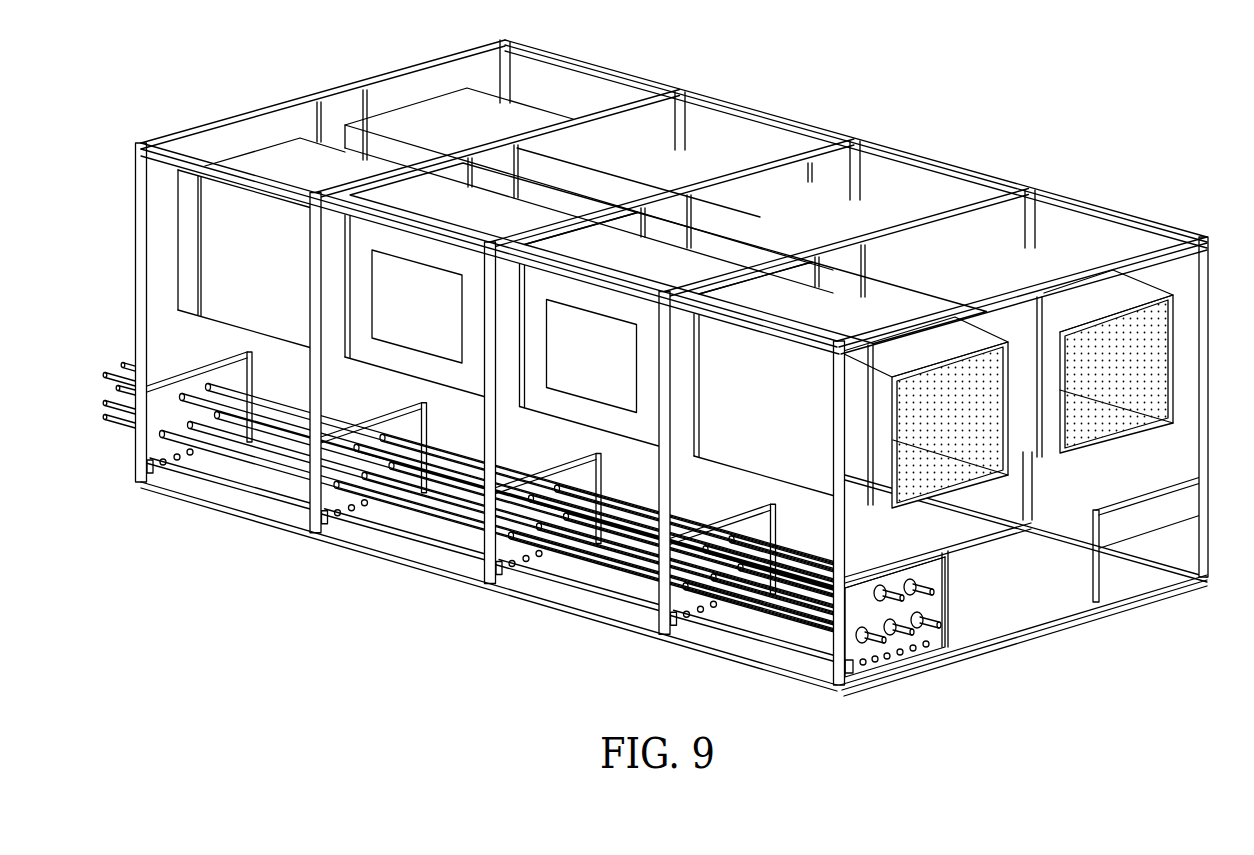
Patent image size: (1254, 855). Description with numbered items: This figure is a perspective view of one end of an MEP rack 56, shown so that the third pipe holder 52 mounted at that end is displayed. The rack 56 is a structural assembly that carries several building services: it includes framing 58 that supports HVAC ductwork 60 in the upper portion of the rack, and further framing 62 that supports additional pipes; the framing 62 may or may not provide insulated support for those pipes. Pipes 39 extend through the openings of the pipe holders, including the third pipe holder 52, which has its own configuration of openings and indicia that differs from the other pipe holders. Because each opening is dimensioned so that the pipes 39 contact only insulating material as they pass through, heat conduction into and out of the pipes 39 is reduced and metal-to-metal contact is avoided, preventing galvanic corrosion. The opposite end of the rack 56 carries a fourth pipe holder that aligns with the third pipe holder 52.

The pipes 39 is at (803, 562).
The third pipe holder 52 is at (958, 597).
The MEP rack 56 is at (962, 145).
The framing 58 is at (199, 249).
The HVAC ductwork 60 is at (973, 277).
The framing 62 is at (393, 387).